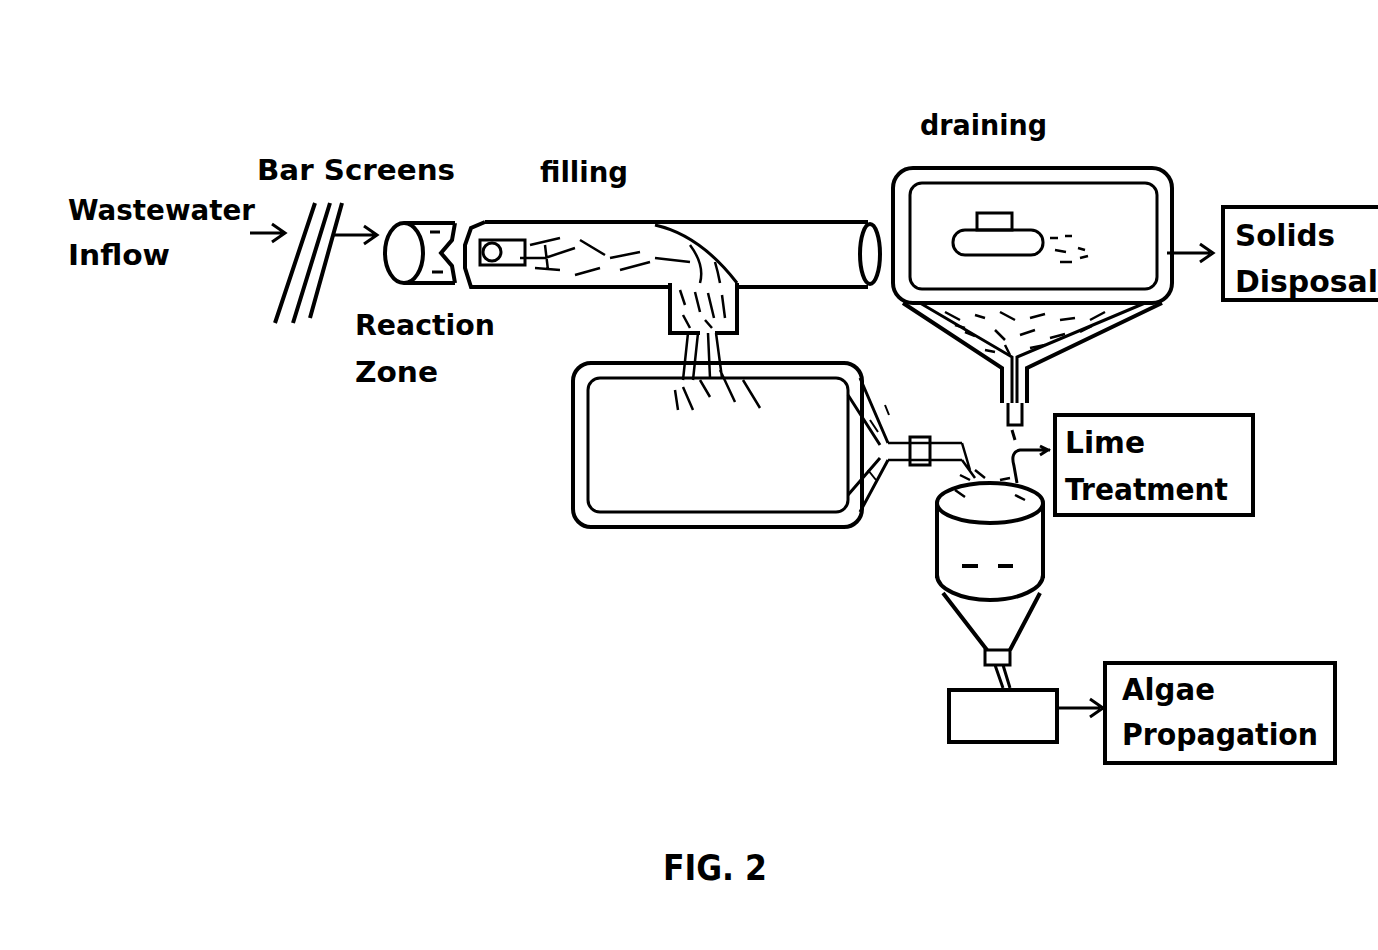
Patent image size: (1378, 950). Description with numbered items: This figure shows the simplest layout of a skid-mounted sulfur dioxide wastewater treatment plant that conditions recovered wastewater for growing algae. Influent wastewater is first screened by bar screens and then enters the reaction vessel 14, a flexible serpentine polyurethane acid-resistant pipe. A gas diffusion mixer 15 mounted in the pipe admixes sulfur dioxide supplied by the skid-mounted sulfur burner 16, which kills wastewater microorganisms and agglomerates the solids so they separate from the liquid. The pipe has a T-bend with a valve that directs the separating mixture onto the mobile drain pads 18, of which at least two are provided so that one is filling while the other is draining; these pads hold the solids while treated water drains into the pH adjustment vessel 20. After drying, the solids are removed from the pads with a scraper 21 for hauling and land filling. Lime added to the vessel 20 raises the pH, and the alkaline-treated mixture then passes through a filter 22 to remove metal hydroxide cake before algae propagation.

The reaction vessel 14 is at (762, 240).
The gas diffusion mixer 15 is at (505, 262).
The sulfur burner 16 is at (512, 200).
The mobile drain pads 18 is at (572, 453).
The pH adjustment vessel 20 is at (1028, 548).
The scraper 21 is at (1015, 240).
The filter 22 is at (949, 722).